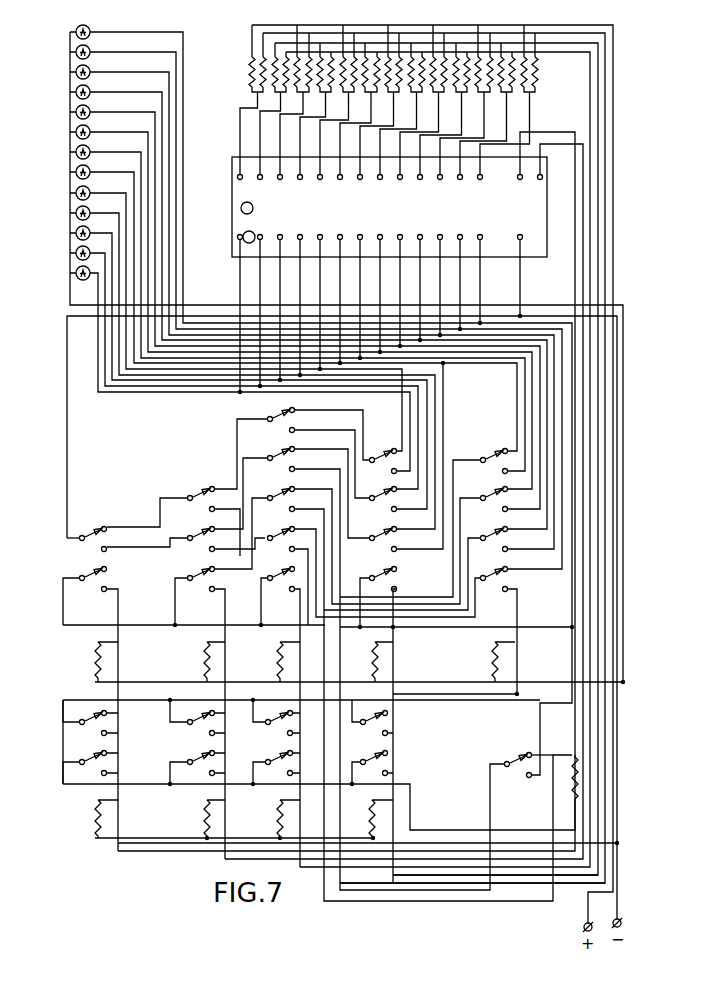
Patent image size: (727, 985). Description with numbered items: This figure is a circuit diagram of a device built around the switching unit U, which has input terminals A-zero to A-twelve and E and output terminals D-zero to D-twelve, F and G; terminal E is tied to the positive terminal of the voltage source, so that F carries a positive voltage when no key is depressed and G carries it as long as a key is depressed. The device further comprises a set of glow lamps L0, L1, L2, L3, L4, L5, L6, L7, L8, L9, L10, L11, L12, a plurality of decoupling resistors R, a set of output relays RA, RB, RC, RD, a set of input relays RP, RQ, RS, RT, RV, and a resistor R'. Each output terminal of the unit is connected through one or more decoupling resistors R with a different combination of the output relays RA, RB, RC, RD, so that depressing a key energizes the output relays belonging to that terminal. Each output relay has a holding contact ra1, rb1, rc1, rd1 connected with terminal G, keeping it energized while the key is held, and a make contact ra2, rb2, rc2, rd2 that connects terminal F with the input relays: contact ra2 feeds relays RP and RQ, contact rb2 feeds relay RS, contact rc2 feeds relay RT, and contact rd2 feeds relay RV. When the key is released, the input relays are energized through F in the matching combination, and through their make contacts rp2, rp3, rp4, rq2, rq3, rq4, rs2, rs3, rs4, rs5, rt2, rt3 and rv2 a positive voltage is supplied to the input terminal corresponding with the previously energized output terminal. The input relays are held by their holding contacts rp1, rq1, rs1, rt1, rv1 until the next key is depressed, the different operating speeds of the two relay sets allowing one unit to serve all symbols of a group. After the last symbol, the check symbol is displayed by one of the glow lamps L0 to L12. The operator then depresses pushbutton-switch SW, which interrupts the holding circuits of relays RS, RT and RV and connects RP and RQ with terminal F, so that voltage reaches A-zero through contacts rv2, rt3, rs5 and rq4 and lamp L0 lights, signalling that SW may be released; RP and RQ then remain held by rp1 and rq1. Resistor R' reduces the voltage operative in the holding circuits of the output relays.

The switching unit U is at (232, 208).
The decoupling resistors R is at (404, 99).
The glow lamp L0 is at (76, 273).
The glow lamp L1 is at (76, 253).
The glow lamp L2 is at (76, 233).
The glow lamp L3 is at (76, 213).
The glow lamp L4 is at (76, 193).
The glow lamp L5 is at (76, 172).
The glow lamp L6 is at (76, 152).
The glow lamp L7 is at (76, 132).
The glow lamp L8 is at (76, 112).
The glow lamp L9 is at (76, 92).
The glow lamp L10 is at (76, 72).
The glow lamp L11 is at (76, 52).
The glow lamp L12 is at (76, 32).
The holding contact rs1 is at (272, 574).
The make contact of relay RS rs2 is at (272, 534).
The make contact of relay RS rs3 is at (272, 494).
The make contact of relay RS rs4 is at (272, 454).
The make contact of relay RS rs5 is at (272, 415).
The holding contact rt1 is at (198, 573).
The make contact of relay RT rt2 is at (198, 533).
The make contact of relay RT rt3 is at (198, 493).
The holding contact rv1 is at (93, 573).
The make contact of relay RV rv2 is at (93, 532).
The holding contact rq1 is at (379, 572).
The make contact of relay RQ rq2 is at (382, 532).
The make contact of relay RQ rq3 is at (383, 492).
The make contact of relay RQ rq4 is at (383, 454).
The holding contact rp1 is at (489, 571).
The make contact of relay RP rp2 is at (489, 531).
The make contact of relay RP rp3 is at (489, 491).
The make contact of relay RP rp4 is at (489, 453).
The input relay RV is at (96, 658).
The input relay RT is at (205, 658).
The input relay RS is at (278, 658).
The input relay RQ is at (372, 667).
The input relay RP is at (492, 653).
The holding contact rd1 is at (82, 759).
The make contact rd2 is at (107, 733).
The holding contact rc1 is at (190, 759).
The make contact rc2 is at (211, 722).
The holding contact rb1 is at (268, 759).
The make contact rb2 is at (291, 722).
The holding contact ra1 is at (386, 760).
The make contact ra2 is at (388, 722).
The output relay RD is at (96, 818).
The output relay RC is at (205, 818).
The output relay RB is at (278, 818).
The output relay RA is at (370, 822).
The pushbutton-switch SW is at (511, 760).
The resistor R' is at (562, 766).